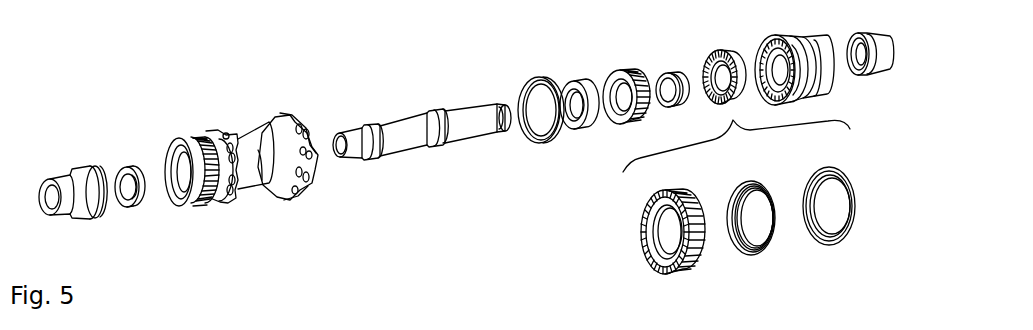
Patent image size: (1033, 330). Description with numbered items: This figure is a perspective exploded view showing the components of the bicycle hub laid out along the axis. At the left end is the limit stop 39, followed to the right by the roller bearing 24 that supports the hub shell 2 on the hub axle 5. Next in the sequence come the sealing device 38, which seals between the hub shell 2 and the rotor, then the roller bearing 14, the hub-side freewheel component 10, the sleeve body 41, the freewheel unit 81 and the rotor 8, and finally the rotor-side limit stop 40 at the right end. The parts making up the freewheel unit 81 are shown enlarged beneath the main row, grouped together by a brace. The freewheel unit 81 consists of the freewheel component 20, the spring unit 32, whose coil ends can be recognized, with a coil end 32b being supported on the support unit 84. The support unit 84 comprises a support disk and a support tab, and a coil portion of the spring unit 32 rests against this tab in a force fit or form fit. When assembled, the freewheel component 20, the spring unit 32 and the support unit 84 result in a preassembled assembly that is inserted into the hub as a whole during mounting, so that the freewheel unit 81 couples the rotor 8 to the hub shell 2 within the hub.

The hub shell 2 is at (225, 108).
The hub axle 5 is at (402, 120).
The rotor 8 is at (800, 40).
The hub-side freewheel component 10 is at (628, 75).
The roller bearing 14 is at (582, 83).
The freewheel component 20 is at (642, 225).
The roller bearing 24 is at (128, 163).
The spring unit 32 is at (760, 253).
The coil end 32b is at (745, 242).
The sealing device 38 is at (528, 85).
The limit stop 39 is at (57, 160).
The rotor-side limit stop 40 is at (882, 60).
The sleeve body 41 is at (673, 73).
The freewheel unit 81 is at (708, 50).
The support unit 84 is at (846, 167).